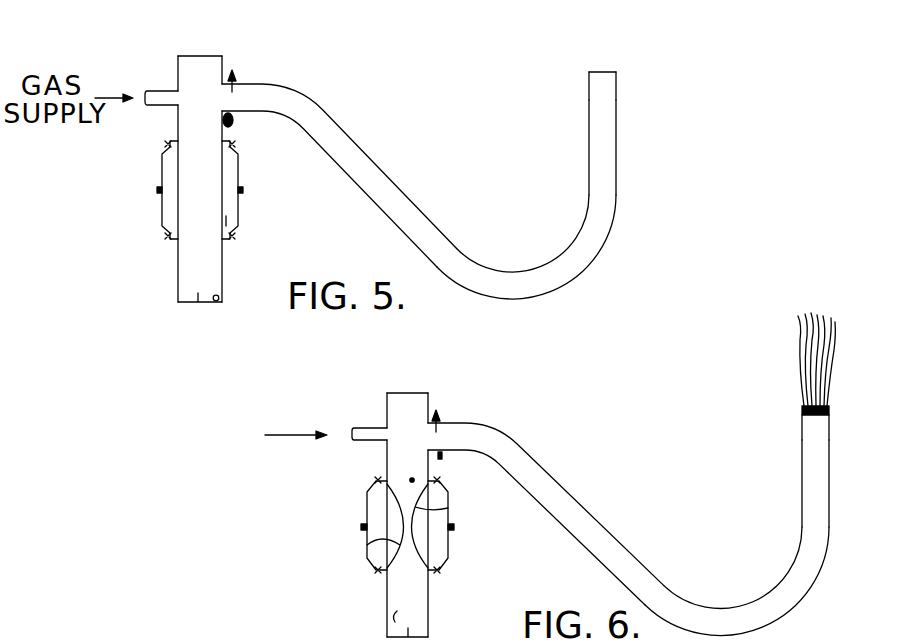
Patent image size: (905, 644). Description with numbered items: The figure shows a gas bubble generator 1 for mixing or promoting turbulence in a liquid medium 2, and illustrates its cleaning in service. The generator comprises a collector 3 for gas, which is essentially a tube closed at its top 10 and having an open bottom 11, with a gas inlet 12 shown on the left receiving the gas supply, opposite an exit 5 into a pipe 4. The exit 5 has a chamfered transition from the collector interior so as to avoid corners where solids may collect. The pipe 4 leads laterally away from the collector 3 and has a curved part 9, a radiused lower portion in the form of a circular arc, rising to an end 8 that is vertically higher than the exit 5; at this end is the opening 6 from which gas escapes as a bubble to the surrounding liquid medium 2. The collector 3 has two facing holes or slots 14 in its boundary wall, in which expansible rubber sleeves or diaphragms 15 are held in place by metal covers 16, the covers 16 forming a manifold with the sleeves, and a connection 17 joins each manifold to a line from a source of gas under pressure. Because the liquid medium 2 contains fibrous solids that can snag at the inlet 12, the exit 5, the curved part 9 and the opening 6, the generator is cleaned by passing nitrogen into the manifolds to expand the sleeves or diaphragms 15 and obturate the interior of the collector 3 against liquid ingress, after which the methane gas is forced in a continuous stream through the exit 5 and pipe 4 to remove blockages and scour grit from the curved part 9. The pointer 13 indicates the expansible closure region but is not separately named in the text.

In FIG. 5, the gas bubble generator 1 is at (451, 110).
In FIG. 6, the gas bubble generator 1 is at (654, 503).
In FIG. 5, the liquid medium 2 is at (306, 245).
In FIG. 6, the liquid medium 2 is at (546, 593).
In FIG. 5, the collector 3 is at (224, 66).
In FIG. 6, the collector 3 is at (386, 400).
In FIG. 5, the pipe 4 is at (612, 208).
In FIG. 6, the pipe 4 is at (812, 552).
In FIG. 5, the exit 5 is at (234, 120).
In FIG. 6, the exit 5 is at (434, 420).
In FIG. 5, the opening 6 is at (590, 72).
In FIG. 6, the opening 6 is at (820, 410).
In FIG. 5, the end of the pipe 8 is at (618, 84).
In FIG. 6, the end of the pipe 8 is at (800, 418).
In FIG. 5, the curved part 9 is at (533, 300).
In FIG. 6, the curved part 9 is at (722, 606).
In FIG. 5, the top 10 is at (196, 56).
In FIG. 6, the top 10 is at (405, 393).
In FIG. 5, the open bottom 11 is at (216, 303).
In FIG. 6, the open bottom 11 is at (392, 605).
In FIG. 5, the gas inlet 12 is at (160, 92).
In FIG. 6, the gas inlet 12 is at (360, 440).
In FIG. 5, the valve housing 13 is at (148, 204).
In FIG. 6, the valve housing 13 is at (354, 514).
In FIG. 5, the holes or slots 14 is at (226, 216).
In FIG. 6, the sleeves or diaphragms 15 is at (372, 543).
In FIG. 5, the covers 16 is at (160, 226).
In FIG. 6, the covers 16 is at (365, 500).
In FIG. 5, the connection 17 is at (150, 190).
In FIG. 6, the connection 17 is at (362, 527).